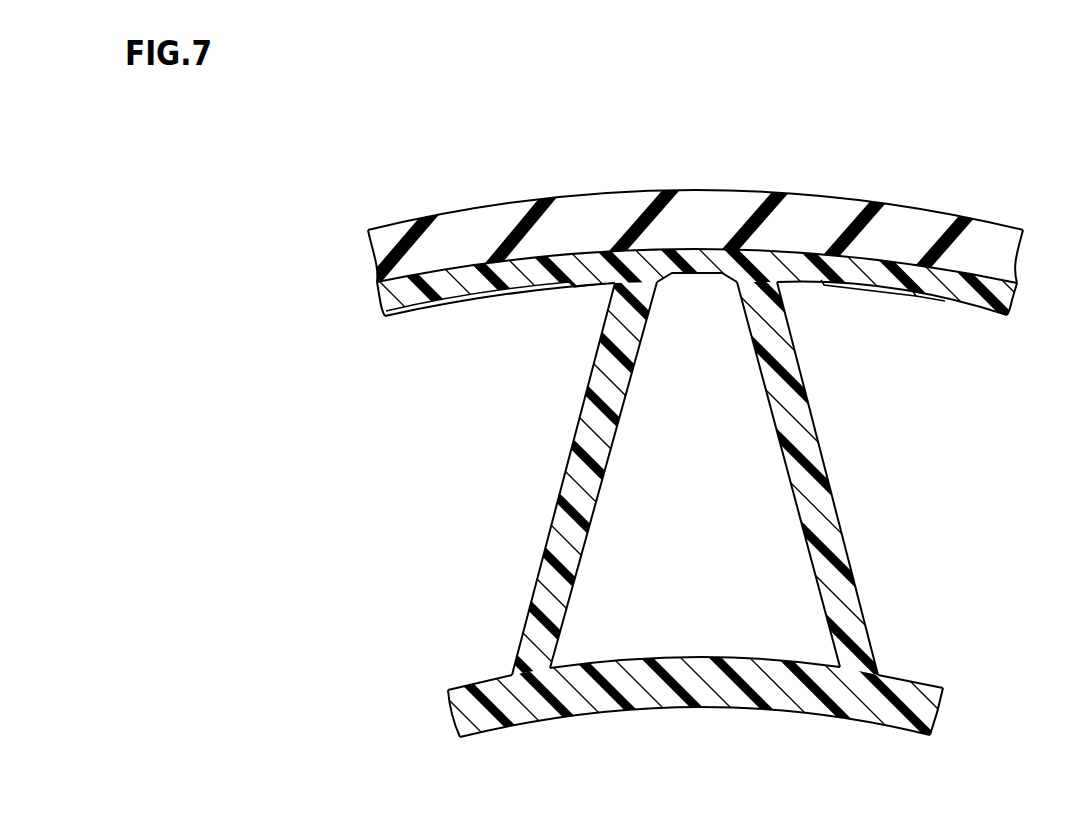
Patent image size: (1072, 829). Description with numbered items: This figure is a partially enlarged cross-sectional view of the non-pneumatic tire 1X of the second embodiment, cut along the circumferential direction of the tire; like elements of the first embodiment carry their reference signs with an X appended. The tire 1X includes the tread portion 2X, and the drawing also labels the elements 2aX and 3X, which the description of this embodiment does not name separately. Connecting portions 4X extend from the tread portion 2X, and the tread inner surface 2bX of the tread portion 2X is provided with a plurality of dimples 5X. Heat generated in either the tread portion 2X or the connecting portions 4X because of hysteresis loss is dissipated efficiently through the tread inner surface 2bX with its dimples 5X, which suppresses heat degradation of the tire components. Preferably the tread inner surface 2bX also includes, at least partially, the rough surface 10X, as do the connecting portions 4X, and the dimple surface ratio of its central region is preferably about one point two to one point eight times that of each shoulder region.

The tire 1X is at (599, 425).
The tread portion 2X is at (644, 252).
The upper plate 2aX is at (483, 208).
The tread inner surface 2bX is at (450, 303).
The bottom plate 3X is at (917, 688).
The connecting portions 4X is at (820, 382).
The dimples 5X is at (515, 292).
The rough surface 10X is at (585, 289).